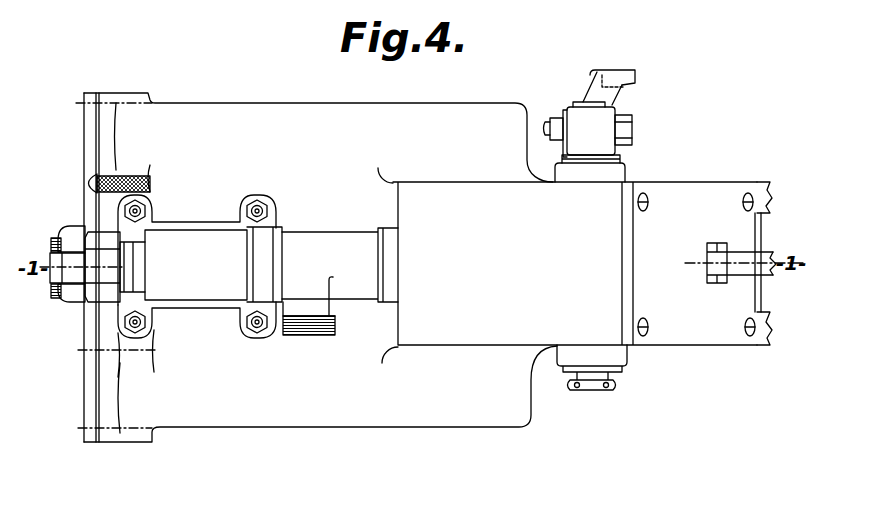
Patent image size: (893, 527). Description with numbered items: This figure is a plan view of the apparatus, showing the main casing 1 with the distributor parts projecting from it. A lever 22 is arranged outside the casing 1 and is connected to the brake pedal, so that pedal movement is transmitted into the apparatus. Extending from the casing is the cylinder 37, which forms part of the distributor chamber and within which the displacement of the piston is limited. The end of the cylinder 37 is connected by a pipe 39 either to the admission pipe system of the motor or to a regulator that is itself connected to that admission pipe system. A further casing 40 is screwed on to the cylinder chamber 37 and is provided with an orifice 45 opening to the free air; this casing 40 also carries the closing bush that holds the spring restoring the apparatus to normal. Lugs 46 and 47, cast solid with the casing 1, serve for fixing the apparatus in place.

The casing 1 is at (575, 286).
The lever 22 is at (617, 94).
The cylinder 37 is at (201, 264).
The pipe 39 is at (55, 237).
The casing 40 is at (343, 245).
The orifice 45 is at (322, 337).
The lug 46 is at (79, 297).
The lug 47 is at (757, 183).